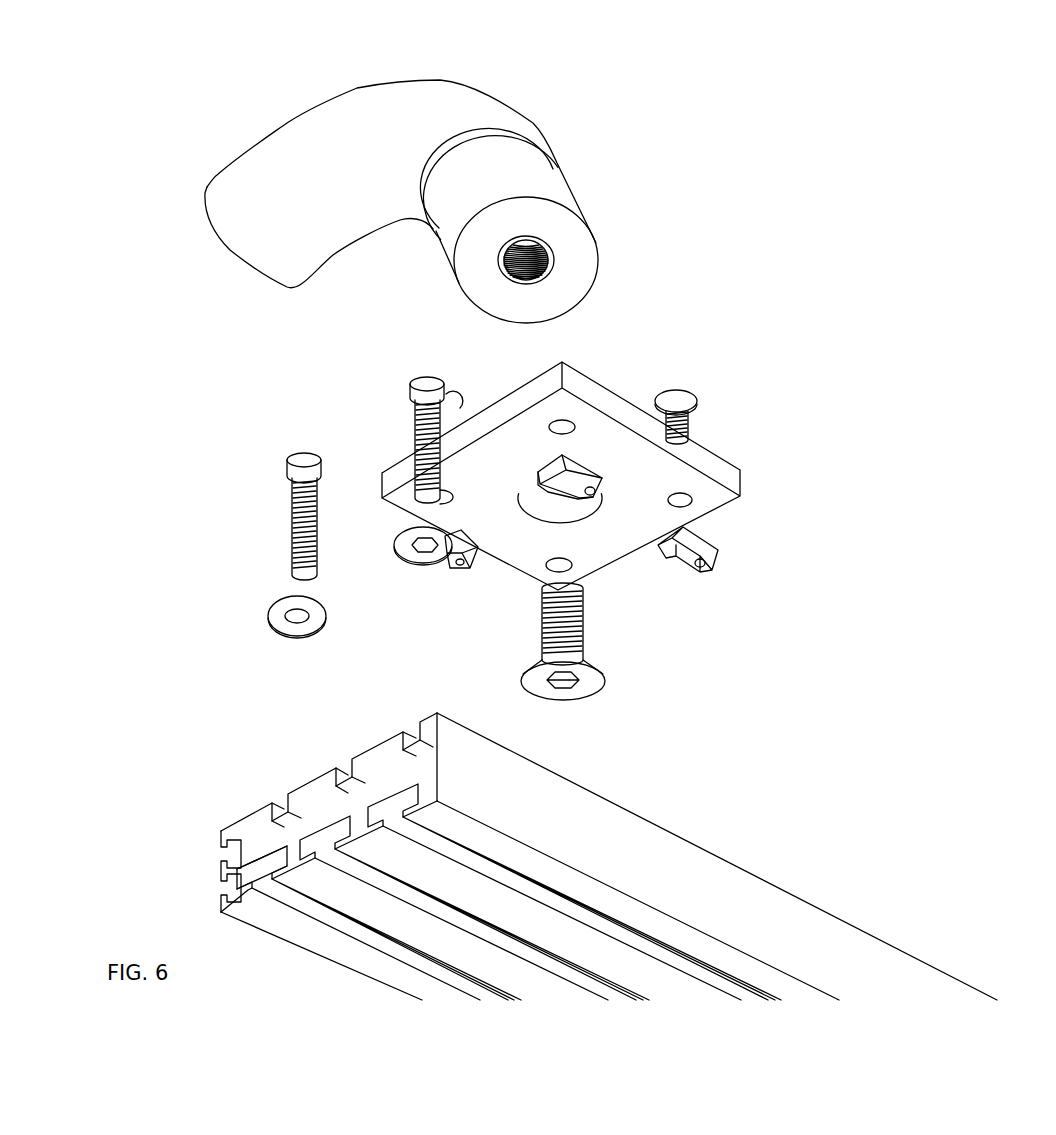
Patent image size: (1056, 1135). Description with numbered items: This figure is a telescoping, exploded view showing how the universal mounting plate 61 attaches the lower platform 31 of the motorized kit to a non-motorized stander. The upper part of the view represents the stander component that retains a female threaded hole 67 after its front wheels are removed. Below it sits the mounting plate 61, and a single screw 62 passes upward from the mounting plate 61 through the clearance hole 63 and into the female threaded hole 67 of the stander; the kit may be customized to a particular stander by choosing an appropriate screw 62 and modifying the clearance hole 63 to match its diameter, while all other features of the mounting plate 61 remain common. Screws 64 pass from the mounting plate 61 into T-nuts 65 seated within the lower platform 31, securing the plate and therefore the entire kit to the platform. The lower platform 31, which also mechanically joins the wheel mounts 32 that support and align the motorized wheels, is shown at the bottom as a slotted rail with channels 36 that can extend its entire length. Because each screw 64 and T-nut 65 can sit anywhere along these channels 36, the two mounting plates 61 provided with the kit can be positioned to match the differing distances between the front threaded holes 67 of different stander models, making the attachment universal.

The female threaded hole 67 is at (547, 261).
The mounting plate 61 is at (515, 575).
The clearance hole 63 is at (570, 512).
The wheel mounts 32 is at (410, 390).
The screws 64 is at (693, 400).
The T-nuts 65 is at (718, 552).
The screw 62 is at (605, 683).
The lower platform 31 is at (691, 847).
The channels 36 is at (277, 828).